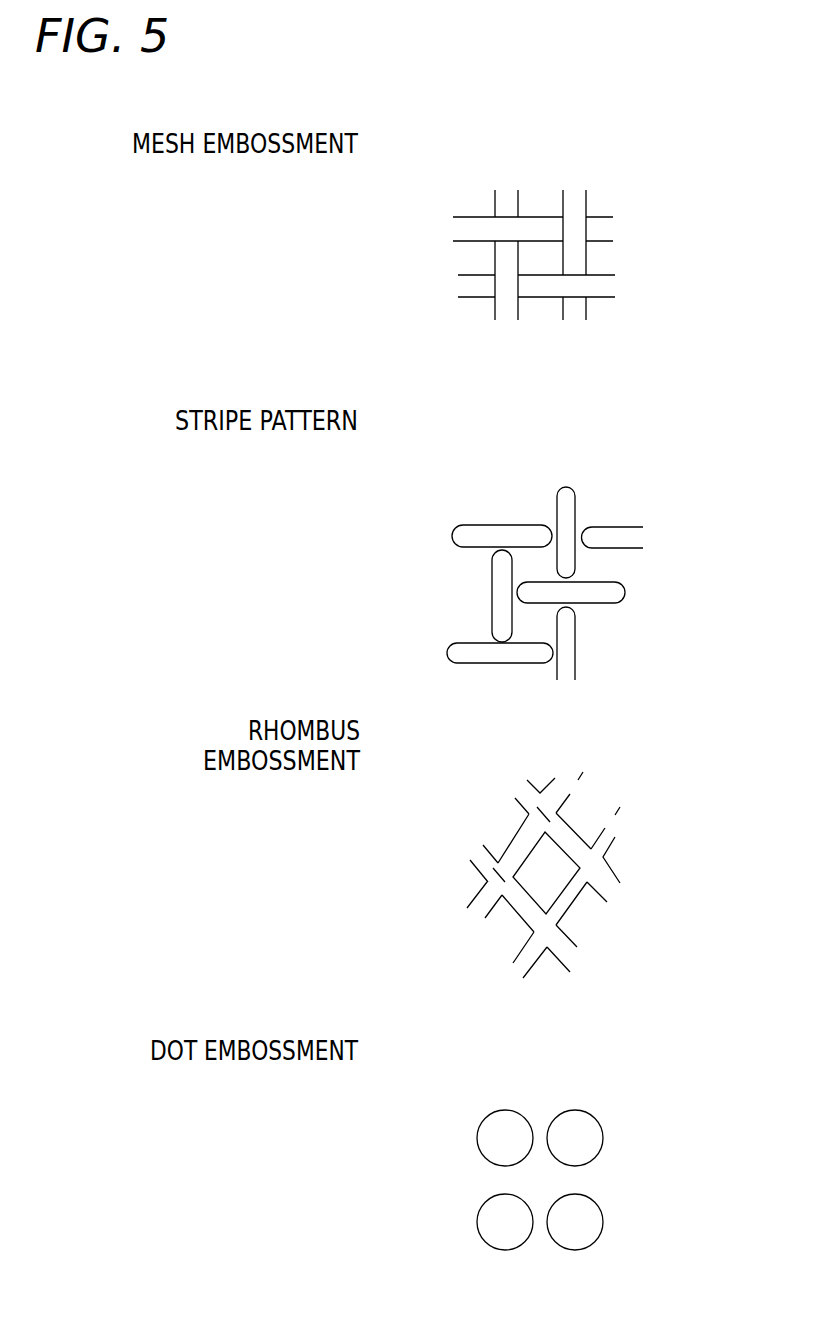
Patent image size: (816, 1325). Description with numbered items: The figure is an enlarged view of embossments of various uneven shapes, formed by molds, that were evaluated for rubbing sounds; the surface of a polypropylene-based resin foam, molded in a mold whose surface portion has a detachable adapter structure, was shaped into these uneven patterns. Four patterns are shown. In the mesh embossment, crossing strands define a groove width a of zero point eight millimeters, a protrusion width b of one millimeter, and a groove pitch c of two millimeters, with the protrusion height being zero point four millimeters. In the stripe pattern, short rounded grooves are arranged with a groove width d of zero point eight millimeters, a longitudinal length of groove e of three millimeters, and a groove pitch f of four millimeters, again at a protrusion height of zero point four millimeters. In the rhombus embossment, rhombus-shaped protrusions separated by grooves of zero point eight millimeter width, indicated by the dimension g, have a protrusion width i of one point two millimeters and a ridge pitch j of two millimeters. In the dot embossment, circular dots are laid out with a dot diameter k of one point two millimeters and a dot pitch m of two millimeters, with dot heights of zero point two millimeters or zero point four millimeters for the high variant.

The groove width a is at (399, 187).
The protrusion width b is at (490, 355).
The groove pitch c is at (574, 205).
The groove width d is at (518, 439).
The longitudinal length of groove e is at (588, 488).
The groove pitch f is at (442, 653).
The groove width between rhombi in rhombus embossment g is at (687, 908).
The protrusion width i is at (570, 732).
The ridge pitch j is at (484, 857).
The dot diameter k is at (538, 1183).
The dot pitch m is at (464, 1222).